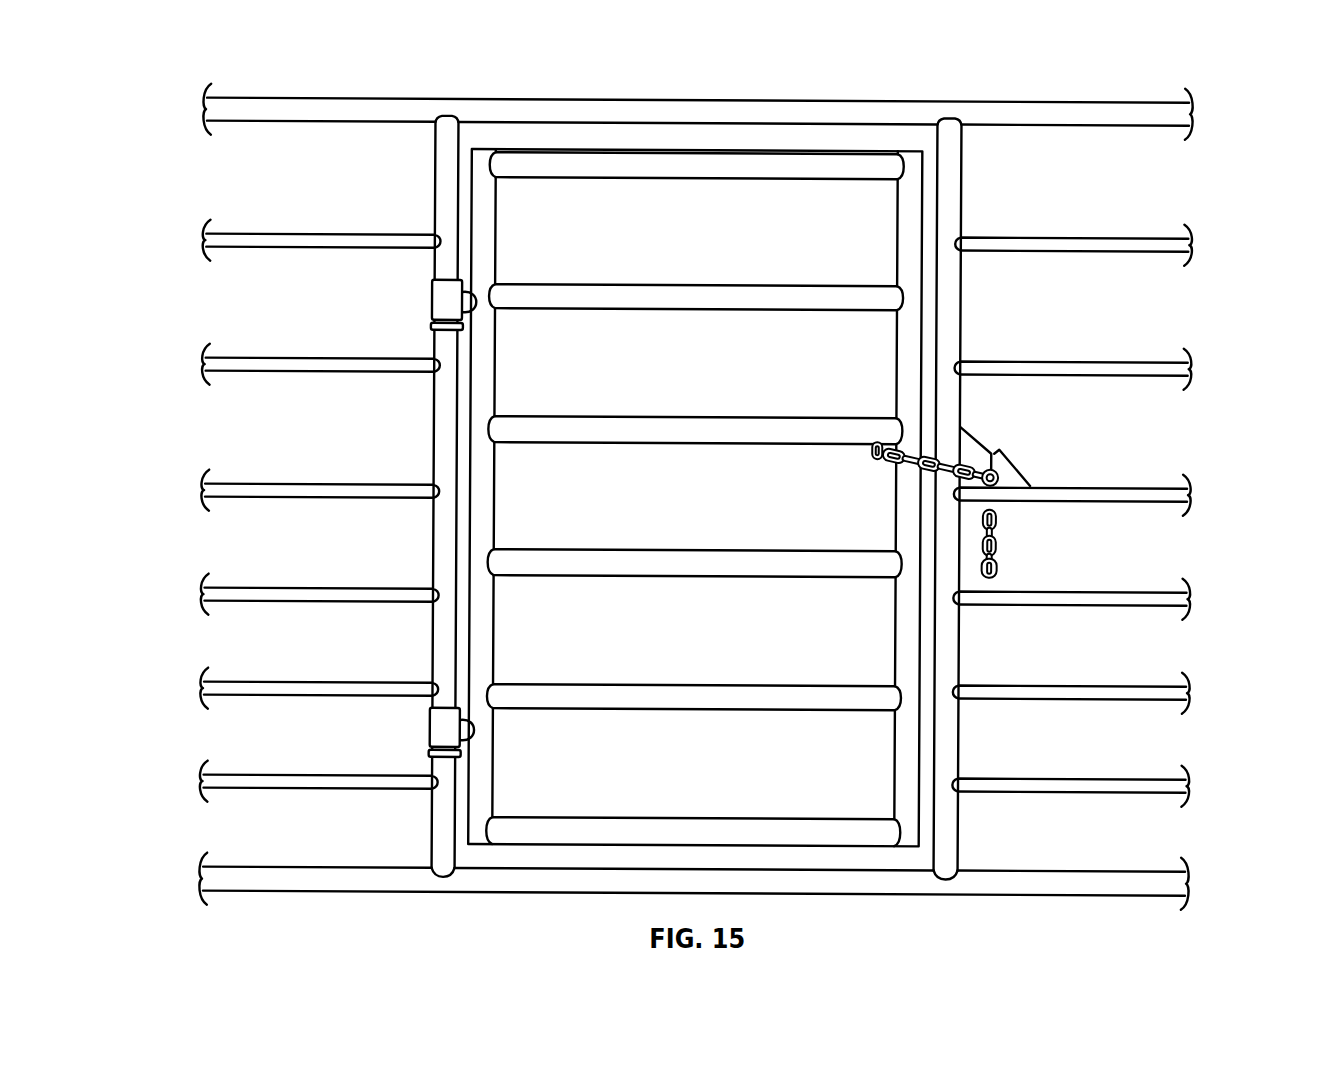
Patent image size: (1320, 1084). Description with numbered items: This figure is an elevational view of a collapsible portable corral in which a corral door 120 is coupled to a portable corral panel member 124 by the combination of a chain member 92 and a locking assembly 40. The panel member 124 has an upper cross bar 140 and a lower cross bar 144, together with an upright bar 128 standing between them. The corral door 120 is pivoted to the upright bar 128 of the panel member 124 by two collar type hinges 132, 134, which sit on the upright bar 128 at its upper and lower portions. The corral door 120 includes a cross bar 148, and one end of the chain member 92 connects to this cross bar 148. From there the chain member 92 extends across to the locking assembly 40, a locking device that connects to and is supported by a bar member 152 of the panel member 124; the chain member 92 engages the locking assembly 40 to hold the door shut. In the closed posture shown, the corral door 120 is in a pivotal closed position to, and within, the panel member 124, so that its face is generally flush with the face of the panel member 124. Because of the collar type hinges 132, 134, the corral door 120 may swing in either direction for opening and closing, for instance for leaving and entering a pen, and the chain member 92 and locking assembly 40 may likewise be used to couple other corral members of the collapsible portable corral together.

The locking assembly 40 is at (982, 433).
The chain member 92 is at (872, 456).
The corral door 120 is at (695, 539).
The portable corral panel member 124 is at (180, 524).
The upright bar 128 is at (435, 194).
The collar type hinge 132 is at (436, 301).
The collar type hinge 134 is at (436, 733).
The upper cross bar 140 is at (728, 107).
The lower cross bar 144 is at (812, 886).
The cross bar 148 is at (728, 425).
The bar member 152 is at (1065, 485).